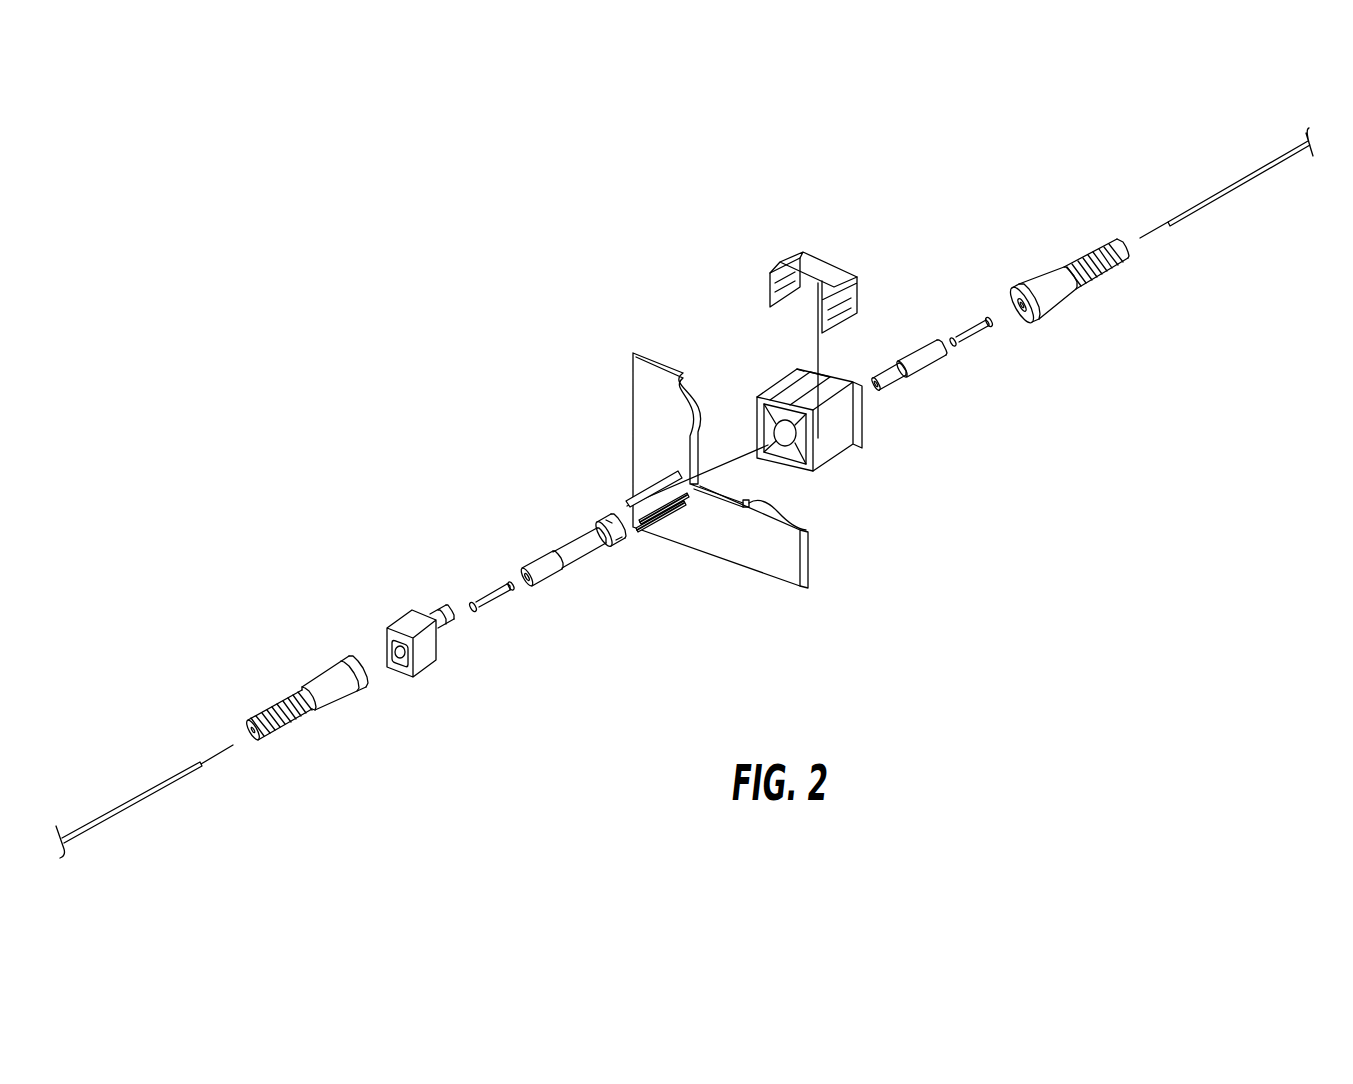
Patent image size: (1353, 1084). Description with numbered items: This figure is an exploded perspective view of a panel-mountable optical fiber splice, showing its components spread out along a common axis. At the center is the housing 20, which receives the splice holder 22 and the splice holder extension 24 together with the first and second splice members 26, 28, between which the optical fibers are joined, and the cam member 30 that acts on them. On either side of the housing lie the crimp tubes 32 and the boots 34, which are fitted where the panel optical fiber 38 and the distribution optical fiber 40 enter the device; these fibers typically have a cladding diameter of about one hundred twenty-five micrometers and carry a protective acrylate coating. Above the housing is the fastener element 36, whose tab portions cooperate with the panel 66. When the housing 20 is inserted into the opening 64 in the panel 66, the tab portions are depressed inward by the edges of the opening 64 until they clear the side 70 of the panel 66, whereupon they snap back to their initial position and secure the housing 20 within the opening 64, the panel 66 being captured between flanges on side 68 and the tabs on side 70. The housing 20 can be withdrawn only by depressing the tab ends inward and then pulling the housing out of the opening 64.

The housing 20 is at (818, 470).
The splice holder 22 is at (580, 562).
The splice holder extension 24 is at (930, 368).
The first splice member 26 is at (658, 483).
The second splice member 28 is at (650, 530).
The cam member 30 is at (423, 670).
The crimp tubes 32 is at (490, 588).
The boots 34 is at (340, 703).
The fastener element 36 is at (815, 263).
The panel optical fiber 38 is at (1153, 233).
The distribution optical fiber 40 is at (213, 753).
The opening 64 is at (735, 485).
The panel 66 is at (737, 466).
The side 68 is at (810, 542).
The side 70 is at (795, 567).